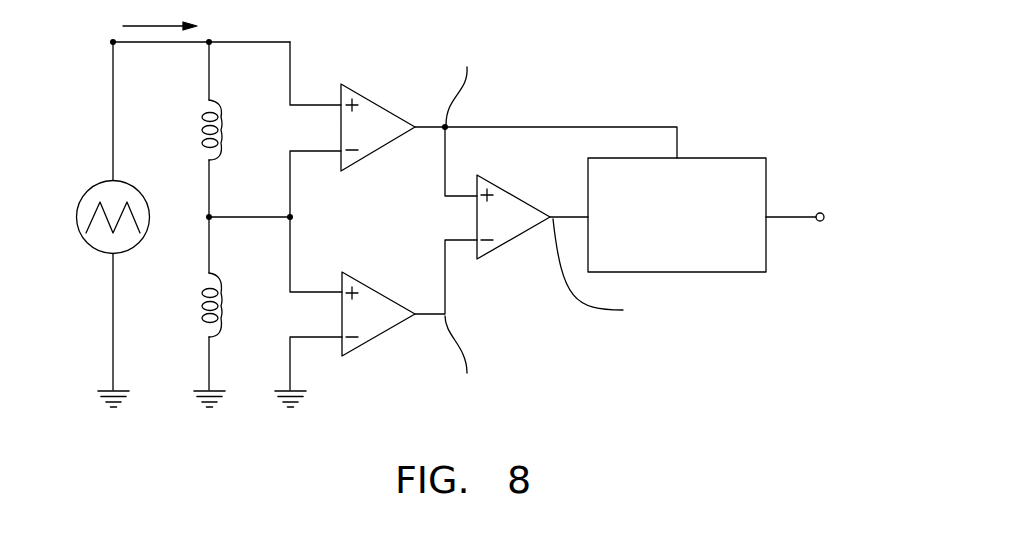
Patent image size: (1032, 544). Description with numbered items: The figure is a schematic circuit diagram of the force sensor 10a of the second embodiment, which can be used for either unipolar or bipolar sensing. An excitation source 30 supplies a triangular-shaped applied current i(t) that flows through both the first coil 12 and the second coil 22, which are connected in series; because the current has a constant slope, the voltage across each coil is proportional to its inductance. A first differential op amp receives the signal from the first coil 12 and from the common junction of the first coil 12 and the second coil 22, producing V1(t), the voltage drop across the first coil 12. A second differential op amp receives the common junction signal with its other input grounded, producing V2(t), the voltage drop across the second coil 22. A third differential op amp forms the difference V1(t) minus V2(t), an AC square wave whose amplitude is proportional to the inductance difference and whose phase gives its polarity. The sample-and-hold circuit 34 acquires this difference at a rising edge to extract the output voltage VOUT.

The excitation source 30 is at (86, 196).
The first coil 12 is at (219, 123).
The second coil 22 is at (219, 298).
The sample-and-hold circuit 34 is at (767, 195).
The sensor 10a is at (591, 350).